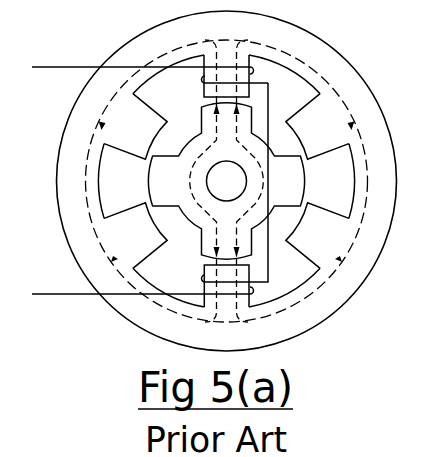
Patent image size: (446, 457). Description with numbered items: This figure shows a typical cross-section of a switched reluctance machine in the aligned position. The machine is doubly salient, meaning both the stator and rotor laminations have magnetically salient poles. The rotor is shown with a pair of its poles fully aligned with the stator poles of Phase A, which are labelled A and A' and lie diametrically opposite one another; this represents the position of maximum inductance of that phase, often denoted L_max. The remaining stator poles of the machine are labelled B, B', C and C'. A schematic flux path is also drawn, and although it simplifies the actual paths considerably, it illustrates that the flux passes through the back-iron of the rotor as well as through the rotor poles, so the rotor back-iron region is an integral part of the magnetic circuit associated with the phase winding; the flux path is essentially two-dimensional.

The Phase A is at (226, 64).
The Phase A A' is at (226, 295).
The stator pole B (phase B) B is at (135, 127).
The stator pole B' (phase B) B' is at (317, 236).
The stator pole C (phase C) C is at (135, 236).
The stator pole C' (phase C) C' is at (317, 127).